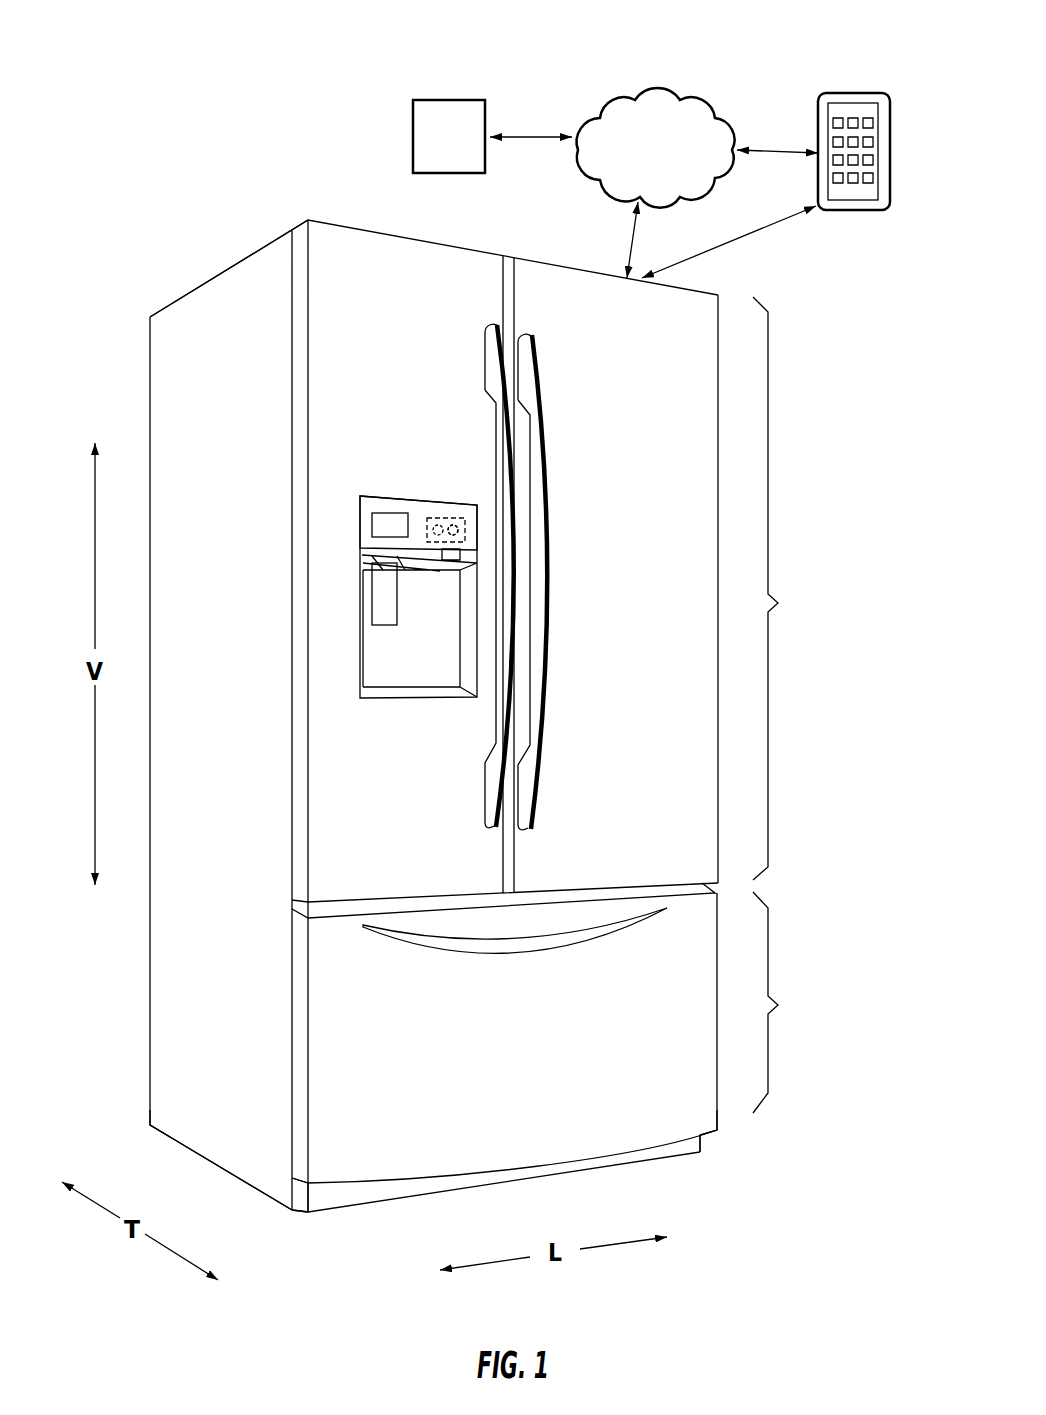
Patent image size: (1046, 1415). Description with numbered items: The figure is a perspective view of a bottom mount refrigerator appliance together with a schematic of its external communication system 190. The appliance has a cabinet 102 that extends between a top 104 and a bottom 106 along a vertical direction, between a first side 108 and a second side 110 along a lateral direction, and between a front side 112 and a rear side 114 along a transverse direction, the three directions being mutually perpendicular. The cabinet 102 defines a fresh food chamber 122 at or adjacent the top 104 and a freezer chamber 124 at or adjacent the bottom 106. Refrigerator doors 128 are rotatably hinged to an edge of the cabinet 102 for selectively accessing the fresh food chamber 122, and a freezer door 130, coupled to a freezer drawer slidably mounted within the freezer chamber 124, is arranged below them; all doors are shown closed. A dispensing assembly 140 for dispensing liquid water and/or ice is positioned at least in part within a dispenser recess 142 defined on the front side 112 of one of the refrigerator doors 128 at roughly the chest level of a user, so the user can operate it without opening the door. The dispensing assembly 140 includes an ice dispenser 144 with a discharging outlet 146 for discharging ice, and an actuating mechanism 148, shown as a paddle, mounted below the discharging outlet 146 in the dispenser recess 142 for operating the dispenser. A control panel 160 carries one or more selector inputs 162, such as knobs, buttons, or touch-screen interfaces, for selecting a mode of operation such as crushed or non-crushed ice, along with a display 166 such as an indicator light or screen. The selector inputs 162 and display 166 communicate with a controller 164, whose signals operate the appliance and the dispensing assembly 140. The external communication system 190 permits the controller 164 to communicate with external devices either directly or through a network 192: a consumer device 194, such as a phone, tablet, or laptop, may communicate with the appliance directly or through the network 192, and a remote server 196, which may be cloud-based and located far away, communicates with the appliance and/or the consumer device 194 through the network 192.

The cabinet 102 is at (220, 310).
The top 104 is at (146, 316).
The bottom 106 is at (136, 1121).
The first side 108 is at (305, 1222).
The second side 110 is at (704, 1160).
The front side 112 is at (287, 1217).
The rear side 114 is at (144, 1134).
The fresh food chamber 122 is at (786, 588).
The freezer chamber 124 is at (786, 1002).
The refrigerator doors 128 is at (427, 363).
The freezer door 130 is at (559, 1040).
The dispensing assembly 140 is at (370, 464).
The dispenser recess 142 is at (423, 688).
The ice dispenser 144 is at (358, 621).
The discharging outlet 146 is at (376, 569).
The actuating mechanism 148 is at (387, 612).
The control panel 160 is at (354, 517).
The selector inputs 162 is at (445, 528).
The controller 164 is at (468, 526).
The display 166 is at (390, 522).
The external communication system 190 is at (762, 58).
The network 192 is at (672, 160).
The consumer device 194 is at (853, 212).
The remote server 196 is at (468, 148).